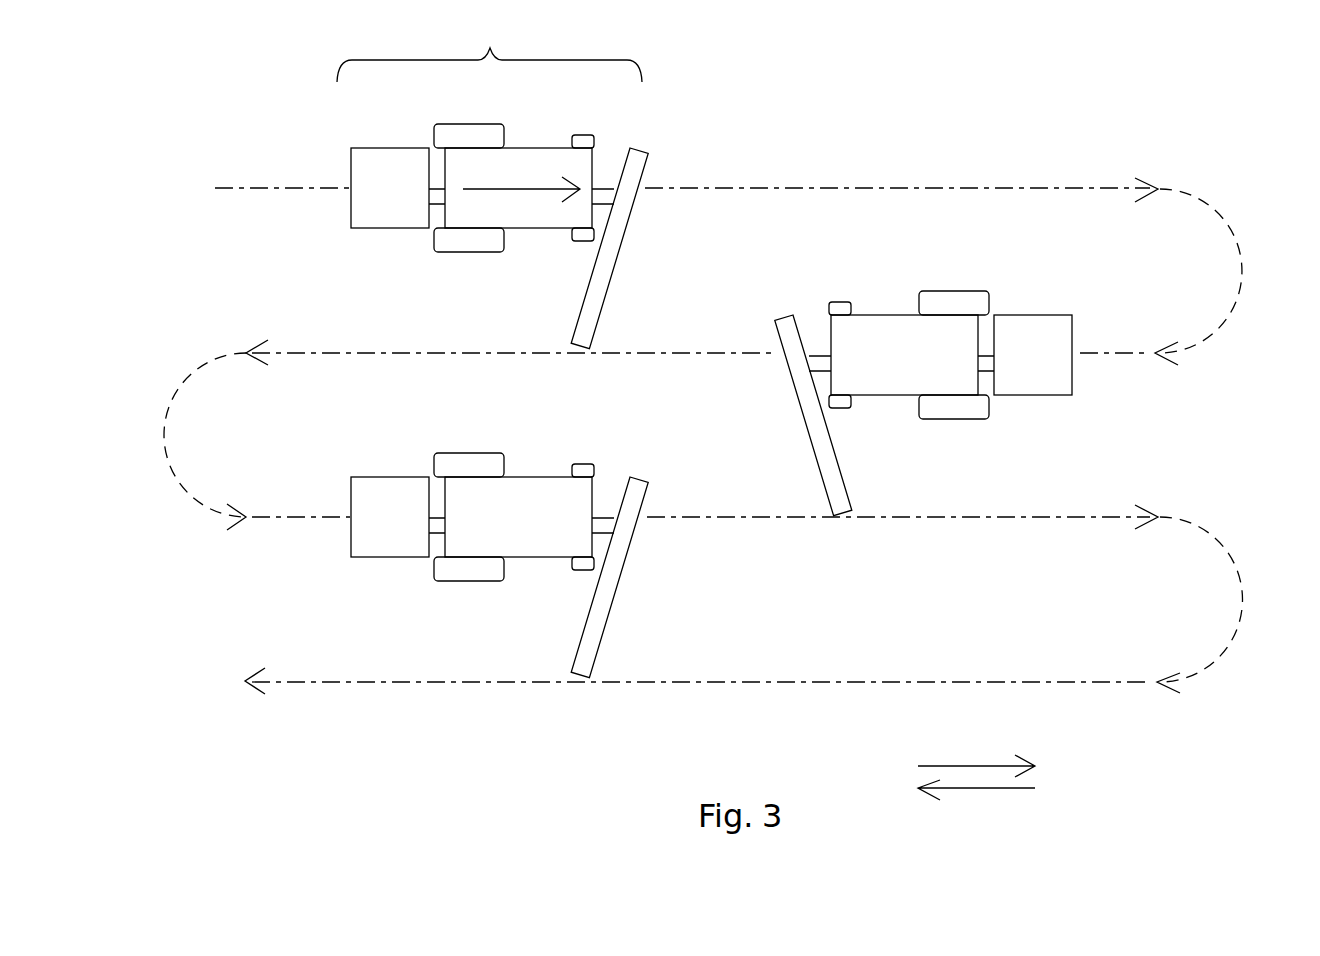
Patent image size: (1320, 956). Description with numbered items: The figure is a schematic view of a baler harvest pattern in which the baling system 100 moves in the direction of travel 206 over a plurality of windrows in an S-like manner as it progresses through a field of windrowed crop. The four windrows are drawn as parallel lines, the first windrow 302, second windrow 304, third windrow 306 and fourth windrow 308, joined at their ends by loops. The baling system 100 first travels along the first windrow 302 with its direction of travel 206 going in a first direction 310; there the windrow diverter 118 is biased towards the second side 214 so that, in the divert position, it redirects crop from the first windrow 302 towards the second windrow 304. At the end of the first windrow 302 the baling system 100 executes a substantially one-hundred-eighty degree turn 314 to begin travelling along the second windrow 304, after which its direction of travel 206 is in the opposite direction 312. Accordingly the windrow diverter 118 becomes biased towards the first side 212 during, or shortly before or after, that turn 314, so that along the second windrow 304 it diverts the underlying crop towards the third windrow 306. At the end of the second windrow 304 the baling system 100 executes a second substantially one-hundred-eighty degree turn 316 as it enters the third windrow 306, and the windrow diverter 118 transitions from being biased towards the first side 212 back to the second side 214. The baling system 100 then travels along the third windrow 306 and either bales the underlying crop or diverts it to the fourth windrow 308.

The baling system 100 is at (542, 184).
The windrow diverter 118 is at (628, 197).
The direction of travel 206 is at (539, 185).
The first side 212 is at (888, 396).
The second side 214 is at (542, 349).
The first windrow 302 is at (898, 188).
The second windrow 304 is at (660, 345).
The third windrow 306 is at (723, 515).
The fourth windrow 308 is at (757, 680).
The first direction 310 is at (977, 765).
The opposite direction 312 is at (977, 790).
The 180 degree turn 314 is at (1227, 222).
The second 180 degree turn 316 is at (185, 377).